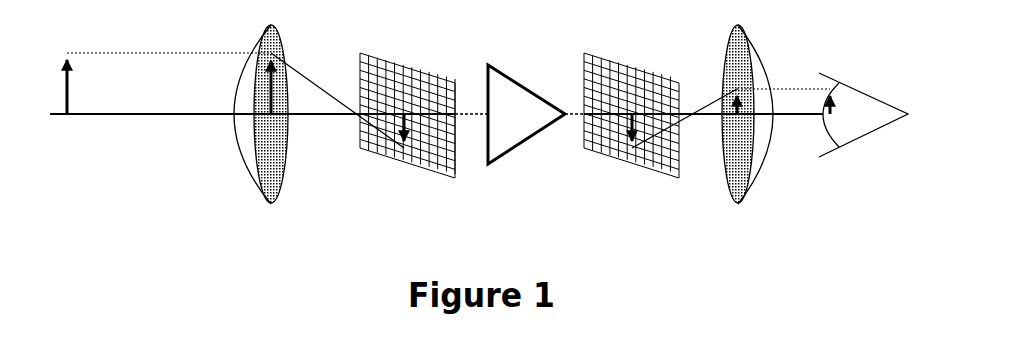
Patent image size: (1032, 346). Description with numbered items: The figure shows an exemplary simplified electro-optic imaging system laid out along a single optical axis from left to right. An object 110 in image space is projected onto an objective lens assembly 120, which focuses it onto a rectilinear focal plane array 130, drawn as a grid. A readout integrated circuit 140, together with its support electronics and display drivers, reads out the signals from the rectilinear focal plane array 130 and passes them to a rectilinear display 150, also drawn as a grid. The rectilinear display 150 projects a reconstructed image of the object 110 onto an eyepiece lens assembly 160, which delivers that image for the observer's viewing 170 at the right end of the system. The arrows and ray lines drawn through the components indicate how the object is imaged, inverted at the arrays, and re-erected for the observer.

The object 110 is at (75, 103).
The objective lens assembly 120 is at (287, 163).
The rectilinear focal plane array 130 is at (410, 170).
The readout integrated circuit 140 is at (520, 145).
The rectilinear display 150 is at (653, 169).
The eyepiece lens assembly 160 is at (763, 170).
The observer's viewing 170 is at (857, 145).